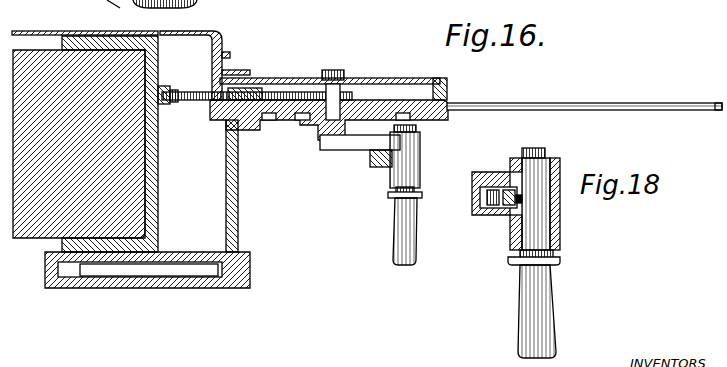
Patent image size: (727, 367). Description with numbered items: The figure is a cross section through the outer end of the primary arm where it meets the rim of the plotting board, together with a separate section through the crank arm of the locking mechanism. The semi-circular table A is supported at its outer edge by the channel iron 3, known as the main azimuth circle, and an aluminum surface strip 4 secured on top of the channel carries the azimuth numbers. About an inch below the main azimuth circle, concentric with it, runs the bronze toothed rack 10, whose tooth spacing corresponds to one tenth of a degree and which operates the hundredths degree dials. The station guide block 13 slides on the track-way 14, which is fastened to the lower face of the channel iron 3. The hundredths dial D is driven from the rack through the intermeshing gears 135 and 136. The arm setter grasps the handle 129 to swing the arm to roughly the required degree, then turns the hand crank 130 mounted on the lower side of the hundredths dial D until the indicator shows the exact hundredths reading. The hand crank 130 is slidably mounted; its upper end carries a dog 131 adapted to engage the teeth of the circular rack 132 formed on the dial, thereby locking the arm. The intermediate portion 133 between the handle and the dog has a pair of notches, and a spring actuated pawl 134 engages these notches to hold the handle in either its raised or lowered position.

In FIG. 16, the aluminum surface strip 4 is at (68, 27).
In FIG. 16, the toothed rack 10 is at (167, 76).
In FIG. 16, the semi-circular table A is at (79, 144).
In FIG. 16, the channel iron 3 is at (150, 172).
In FIG. 16, the track-way 14 is at (208, 250).
In FIG. 16, the guide block 13 is at (248, 186).
In FIG. 16, the hundredths dial D is at (332, 101).
In FIG. 16, the intermeshing gear 135 is at (196, 89).
In FIG. 16, the intermeshing gear 136 is at (290, 88).
In FIG. 16, the circular rack 132 is at (407, 119).
In FIG. 16, the dog 131 is at (414, 137).
In FIG. 18, the dog 131 is at (542, 150).
In FIG. 16, the hand crank 130 is at (400, 225).
In FIG. 18, the hand crank 130 is at (559, 304).
In FIG. 16, the handle 129 is at (584, 96).
In FIG. 18, the spring actuated pawl 134 is at (496, 210).
In FIG. 18, the notched intermediate portion 133 is at (520, 208).